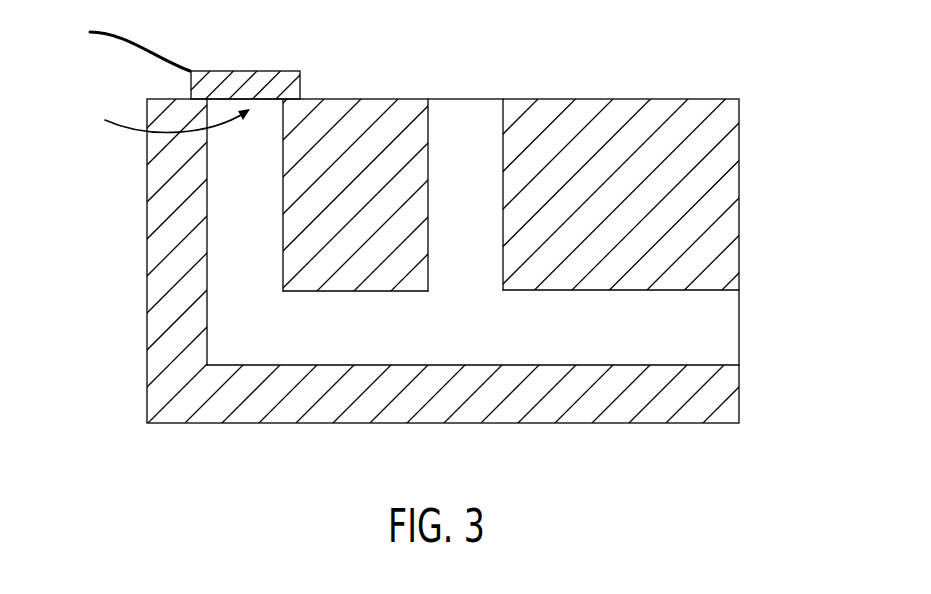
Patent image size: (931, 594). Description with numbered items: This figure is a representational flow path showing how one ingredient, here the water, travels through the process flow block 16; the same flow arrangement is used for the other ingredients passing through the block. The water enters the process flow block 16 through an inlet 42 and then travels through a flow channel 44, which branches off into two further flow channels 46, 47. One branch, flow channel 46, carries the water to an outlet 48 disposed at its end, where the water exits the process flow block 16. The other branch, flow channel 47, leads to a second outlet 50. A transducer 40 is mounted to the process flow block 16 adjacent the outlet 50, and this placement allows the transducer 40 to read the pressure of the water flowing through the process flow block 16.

The process flow block 16 is at (148, 347).
The transducer 40 is at (223, 70).
The inlet 42 is at (744, 334).
The flow channel 44 is at (527, 365).
The flow channel 46 is at (503, 220).
The flow channel 47 is at (227, 250).
The outlet 48 is at (481, 98).
The outlet 50 is at (161, 118).